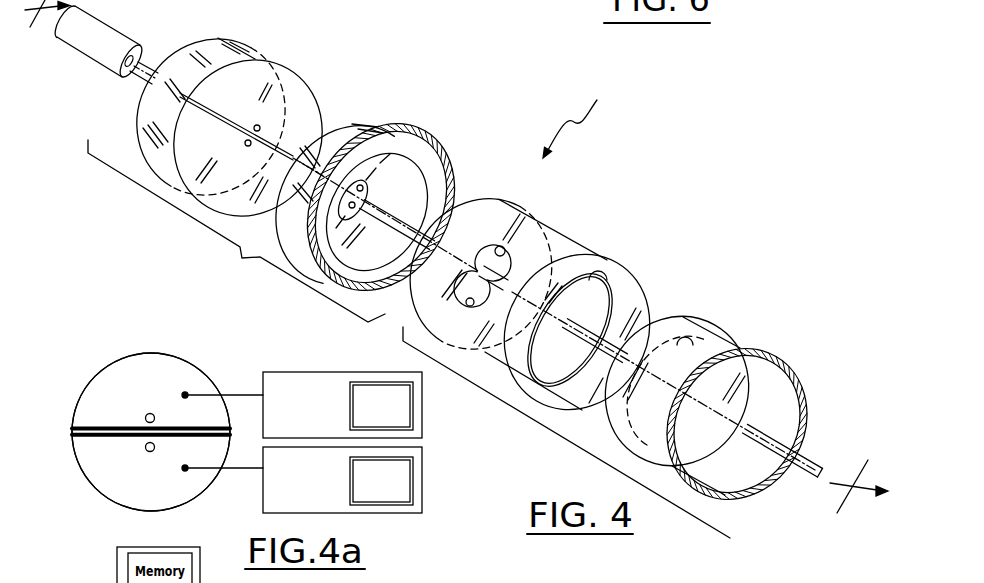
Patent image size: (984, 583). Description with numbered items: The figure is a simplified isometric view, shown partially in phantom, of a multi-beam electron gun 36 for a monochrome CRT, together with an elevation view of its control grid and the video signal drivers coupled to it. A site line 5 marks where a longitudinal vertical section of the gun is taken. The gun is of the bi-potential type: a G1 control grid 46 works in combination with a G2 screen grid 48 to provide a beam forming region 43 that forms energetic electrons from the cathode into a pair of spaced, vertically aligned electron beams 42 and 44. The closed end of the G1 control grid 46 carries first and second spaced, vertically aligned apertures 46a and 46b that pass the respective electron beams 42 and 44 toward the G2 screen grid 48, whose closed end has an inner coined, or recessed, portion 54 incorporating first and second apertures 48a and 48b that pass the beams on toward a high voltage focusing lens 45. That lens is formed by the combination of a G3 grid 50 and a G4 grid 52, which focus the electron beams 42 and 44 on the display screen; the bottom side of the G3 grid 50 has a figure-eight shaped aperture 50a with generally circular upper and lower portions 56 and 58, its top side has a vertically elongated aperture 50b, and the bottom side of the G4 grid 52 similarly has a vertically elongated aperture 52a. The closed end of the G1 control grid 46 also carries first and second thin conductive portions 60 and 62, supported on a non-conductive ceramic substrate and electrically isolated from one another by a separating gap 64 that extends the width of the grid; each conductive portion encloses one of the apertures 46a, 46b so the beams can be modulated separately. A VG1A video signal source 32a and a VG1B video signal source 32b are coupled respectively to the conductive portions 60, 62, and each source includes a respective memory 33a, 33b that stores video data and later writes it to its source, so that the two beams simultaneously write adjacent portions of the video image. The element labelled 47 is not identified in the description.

In FIG. 4, the site line 5- 5 is at (456, 259).
In FIG. 4, the multi-beam electron gun 36 is at (578, 118).
In FIG. 4, the first electron beam 42 is at (795, 447).
In FIG. 4, the beam forming region 43 is at (236, 231).
In FIG. 4, the second electron beam 44 is at (796, 471).
In FIG. 4, the high voltage focusing lens 45 is at (566, 432).
In FIG. 4, the G1 control grid 46 is at (255, 34).
In FIG. 4A, the G1 control grid 46 is at (101, 357).
In FIG. 4, the first aperture 46a is at (259, 126).
In FIG. 4A, the first aperture 46a is at (151, 413).
In FIG. 4, the second aperture 46b is at (248, 147).
In FIG. 4A, the second aperture 46b is at (150, 452).
In FIG. 4, the shaft 47 is at (157, 153).
In FIG. 4, the G2 screen grid 48 is at (375, 120).
In FIG. 4, the first aperture 48a is at (390, 155).
In FIG. 4, the second aperture 48b is at (349, 222).
In FIG. 4, the G3 grid 50 is at (556, 233).
In FIG. 4, the figure-8 shaped aperture 50a is at (482, 235).
In FIG. 4, the vertically elongated aperture 50b is at (606, 280).
In FIG. 4, the G4 grid 52 is at (741, 340).
In FIG. 4, the vertically elongated aperture 52a is at (695, 337).
In FIG. 4, the inner coined portion 54 is at (338, 217).
In FIG. 4, the upper portion 56 is at (504, 249).
In FIG. 4, the lower portion 58 is at (473, 306).
In FIG. 4, the first conductive portion 60 is at (253, 92).
In FIG. 4A, the first conductive portion 60 is at (138, 401).
In FIG. 4, the second conductive portion 62 is at (198, 163).
In FIG. 4A, the second conductive portion 62 is at (138, 473).
In FIG. 4, the separating gap 64 is at (213, 108).
In FIG. 4A, the separating gap 64 is at (87, 426).
In FIG. 4A, the VG1A video signal source 32a is at (325, 392).
In FIG. 4A, the VG1B video signal source 32b is at (332, 507).
In FIG. 4A, the memory 33a is at (403, 427).
In FIG. 4A, the memory 33b is at (403, 502).